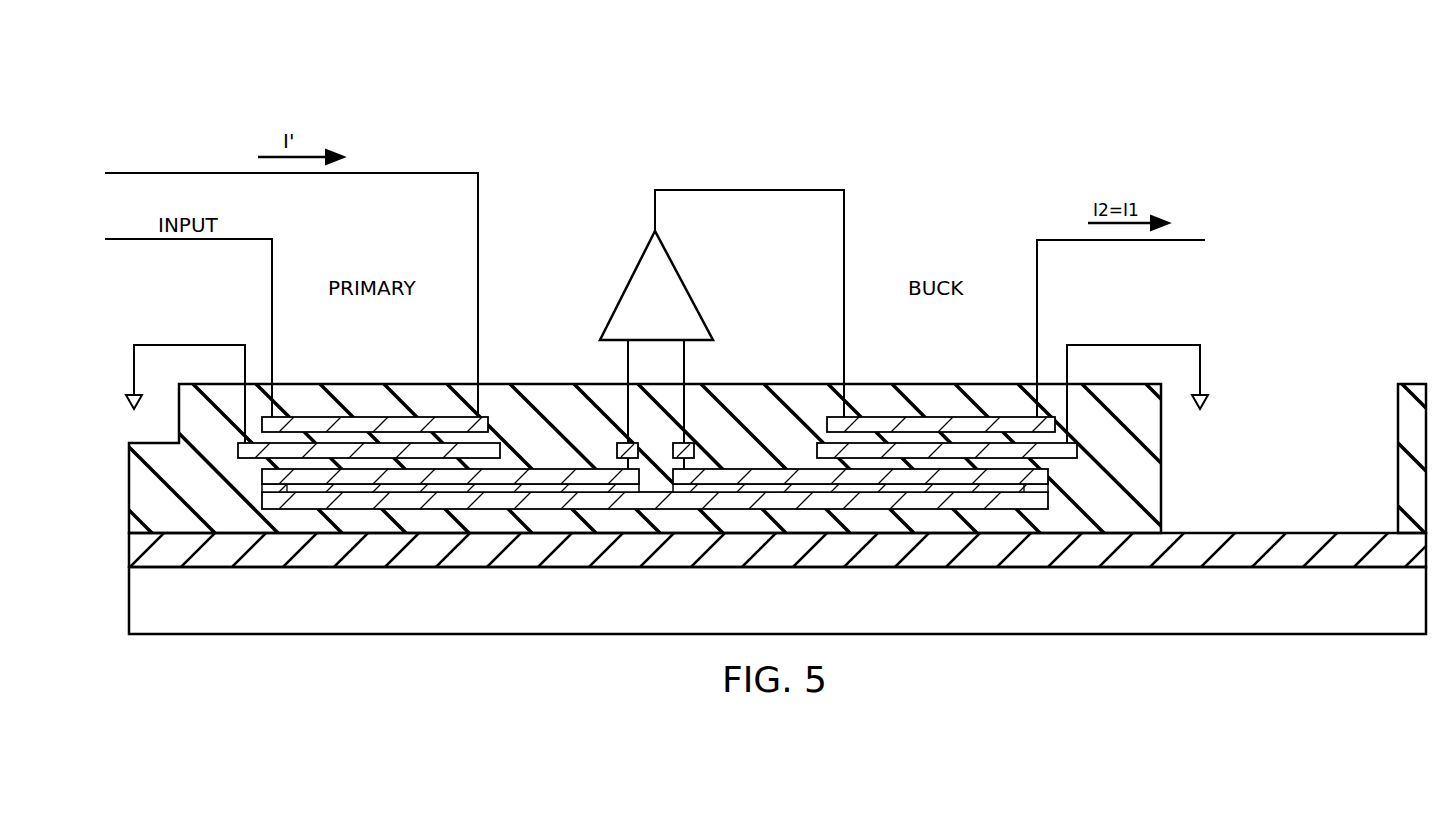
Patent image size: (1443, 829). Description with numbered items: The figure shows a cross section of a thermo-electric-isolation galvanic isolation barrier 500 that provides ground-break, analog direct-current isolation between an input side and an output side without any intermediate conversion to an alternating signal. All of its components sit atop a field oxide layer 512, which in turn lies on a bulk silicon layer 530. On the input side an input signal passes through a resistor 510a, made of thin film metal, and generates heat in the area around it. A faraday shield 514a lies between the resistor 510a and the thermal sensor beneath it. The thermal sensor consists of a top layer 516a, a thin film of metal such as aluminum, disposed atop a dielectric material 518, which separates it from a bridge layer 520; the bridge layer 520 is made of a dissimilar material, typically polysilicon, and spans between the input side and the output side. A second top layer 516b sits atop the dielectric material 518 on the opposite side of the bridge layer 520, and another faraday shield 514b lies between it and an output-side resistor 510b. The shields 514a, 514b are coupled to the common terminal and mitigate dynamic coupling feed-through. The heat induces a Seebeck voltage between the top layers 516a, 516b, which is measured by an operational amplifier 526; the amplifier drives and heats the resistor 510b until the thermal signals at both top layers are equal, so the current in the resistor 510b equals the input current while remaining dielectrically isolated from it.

The TEI galvanic isolation barrier 500 is at (458, 88).
The resistor 510a is at (362, 424).
The resistor 510b is at (955, 425).
The field oxide layer 512 is at (136, 552).
The faraday shield 514a is at (445, 450).
The faraday shield 514b is at (862, 450).
The top layer 516a is at (540, 471).
The top layer 516b is at (737, 471).
The dielectric material 518 is at (445, 489).
The bridge layer 520 is at (555, 498).
The operational amplifier 526 is at (629, 282).
The bulk silicon layer 530 is at (800, 616).